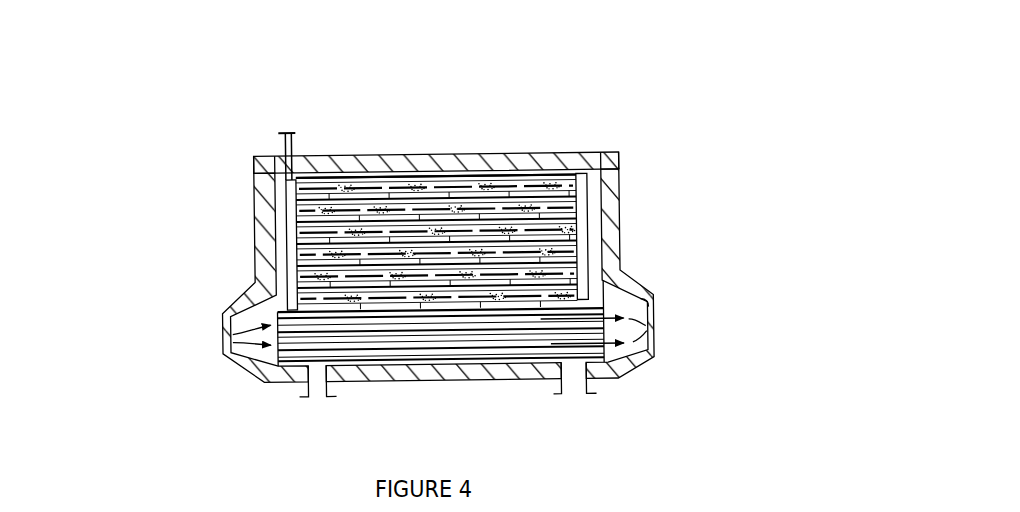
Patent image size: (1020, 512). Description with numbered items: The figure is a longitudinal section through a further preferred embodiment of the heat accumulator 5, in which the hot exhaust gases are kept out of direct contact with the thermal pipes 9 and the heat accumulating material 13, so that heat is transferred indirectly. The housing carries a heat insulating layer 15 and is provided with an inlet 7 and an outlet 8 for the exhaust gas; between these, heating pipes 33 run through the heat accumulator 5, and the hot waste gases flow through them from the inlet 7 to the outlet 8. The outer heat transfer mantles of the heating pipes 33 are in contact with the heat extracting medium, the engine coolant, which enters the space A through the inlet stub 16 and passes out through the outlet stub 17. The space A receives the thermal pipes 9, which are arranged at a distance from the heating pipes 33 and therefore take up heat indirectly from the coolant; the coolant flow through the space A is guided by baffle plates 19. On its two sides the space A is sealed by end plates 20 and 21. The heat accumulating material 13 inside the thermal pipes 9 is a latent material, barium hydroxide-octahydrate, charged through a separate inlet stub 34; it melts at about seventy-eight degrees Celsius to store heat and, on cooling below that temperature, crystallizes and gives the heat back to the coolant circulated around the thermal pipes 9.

The heat accumulator 5 is at (613, 100).
The inlet 7 is at (223, 320).
The outlet 8 is at (700, 327).
The thermal pipes 9 is at (558, 232).
The heat accumulating material 13 is at (445, 202).
The space A is at (477, 180).
The heat insulating layer 15 is at (619, 242).
The inlet stub 16 is at (585, 385).
The outlet stub 17 is at (323, 387).
The baffle plates 19 is at (392, 317).
The end plate 20 is at (290, 230).
The end plate 21 is at (581, 213).
The heating pipes 33 is at (456, 340).
The inlet stub 34 is at (296, 146).